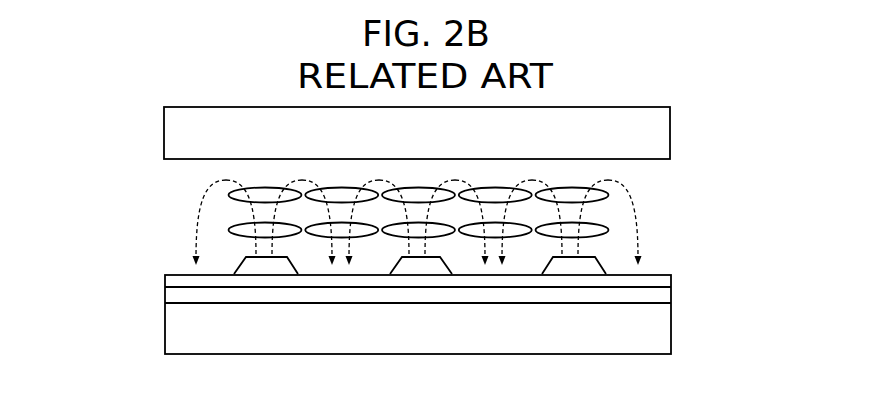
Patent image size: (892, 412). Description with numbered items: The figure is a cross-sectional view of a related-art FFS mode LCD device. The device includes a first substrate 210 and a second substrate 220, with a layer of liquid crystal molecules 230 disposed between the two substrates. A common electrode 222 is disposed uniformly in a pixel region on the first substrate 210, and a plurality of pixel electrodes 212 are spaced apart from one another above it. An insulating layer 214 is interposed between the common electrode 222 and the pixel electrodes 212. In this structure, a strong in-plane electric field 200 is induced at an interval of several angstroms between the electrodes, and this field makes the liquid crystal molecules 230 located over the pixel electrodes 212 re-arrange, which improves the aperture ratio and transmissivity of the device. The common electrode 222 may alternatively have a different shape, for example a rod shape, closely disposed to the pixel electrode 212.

The in-plane electric field 200 is at (200, 205).
The first substrate 210 is at (657, 340).
The pixel electrode 212 is at (268, 266).
The insulating layer 214 is at (671, 282).
The second substrate 220 is at (657, 142).
The common electrode 222 is at (669, 293).
The layer of liquid crystal molecules 230 is at (682, 160).